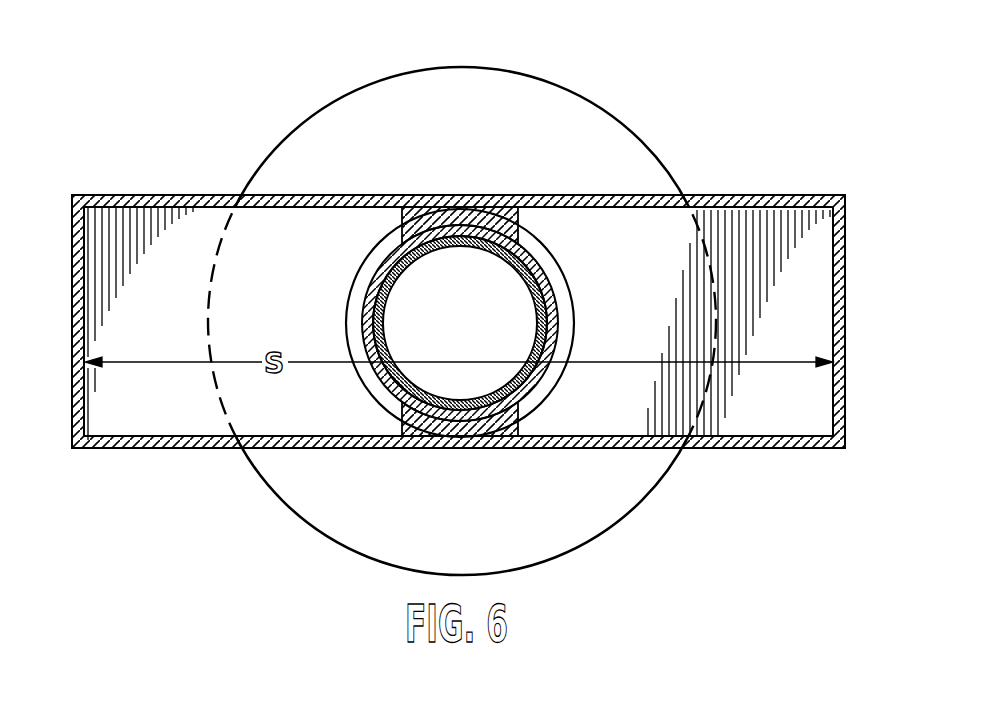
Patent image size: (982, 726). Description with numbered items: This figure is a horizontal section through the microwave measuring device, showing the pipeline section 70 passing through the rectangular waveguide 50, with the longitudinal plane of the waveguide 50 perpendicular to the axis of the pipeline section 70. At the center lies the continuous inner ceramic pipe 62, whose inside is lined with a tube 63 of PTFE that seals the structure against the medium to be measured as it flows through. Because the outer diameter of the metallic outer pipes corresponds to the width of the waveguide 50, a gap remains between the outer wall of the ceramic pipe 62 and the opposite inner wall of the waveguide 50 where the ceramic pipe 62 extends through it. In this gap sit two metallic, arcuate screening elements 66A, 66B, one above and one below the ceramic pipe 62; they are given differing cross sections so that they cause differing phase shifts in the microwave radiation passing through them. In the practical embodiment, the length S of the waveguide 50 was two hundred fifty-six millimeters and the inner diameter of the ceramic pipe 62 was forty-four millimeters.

The waveguide 50 is at (736, 188).
The pipeline section 70 is at (362, 294).
The ceramic pipe 62 is at (549, 284).
The tube of PTFE 63 is at (541, 378).
The arcuate screening element 66A is at (487, 208).
The arcuate screening element 66B is at (488, 437).